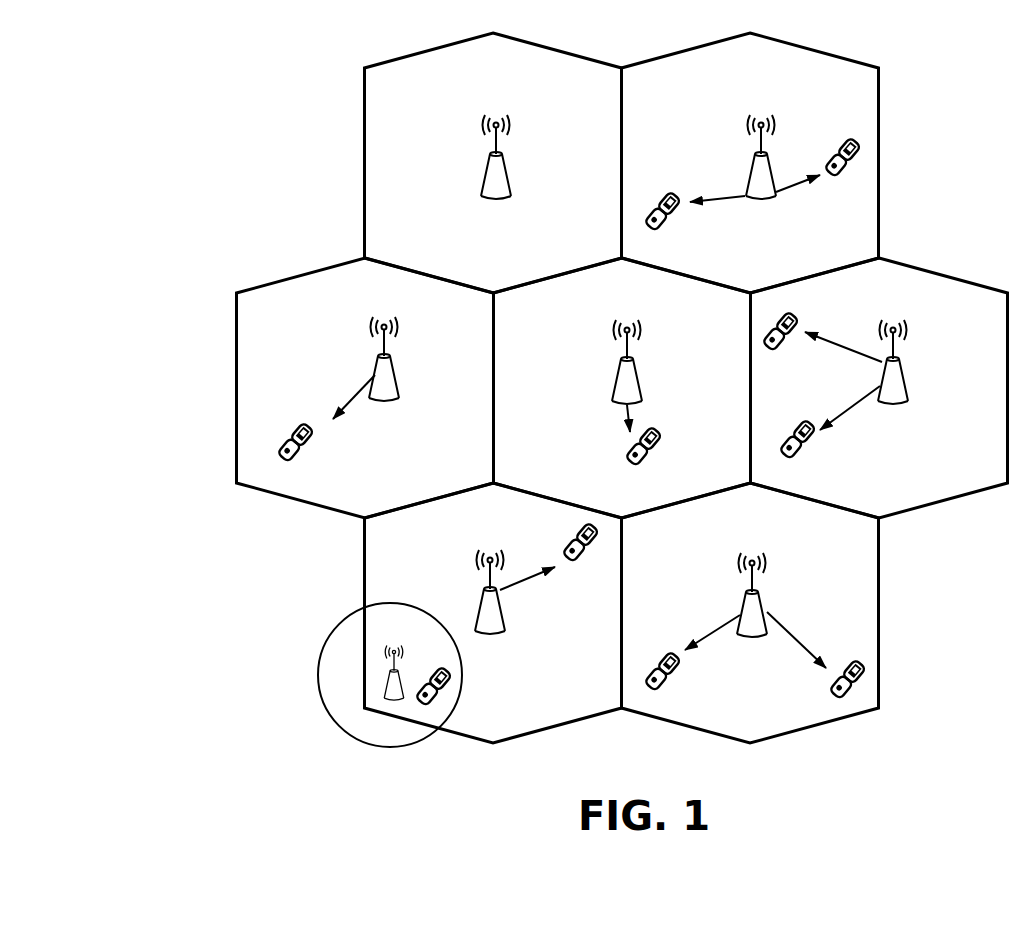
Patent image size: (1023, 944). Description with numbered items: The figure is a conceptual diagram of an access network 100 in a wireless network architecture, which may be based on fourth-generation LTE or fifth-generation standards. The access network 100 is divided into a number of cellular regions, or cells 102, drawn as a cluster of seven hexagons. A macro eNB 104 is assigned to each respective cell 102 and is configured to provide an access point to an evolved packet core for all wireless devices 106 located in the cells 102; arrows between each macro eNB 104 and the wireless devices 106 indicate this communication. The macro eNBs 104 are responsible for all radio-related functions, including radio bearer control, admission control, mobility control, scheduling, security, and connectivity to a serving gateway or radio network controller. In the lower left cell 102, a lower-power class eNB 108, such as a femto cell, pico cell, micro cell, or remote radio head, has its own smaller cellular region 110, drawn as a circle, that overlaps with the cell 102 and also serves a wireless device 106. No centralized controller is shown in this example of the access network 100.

The access network 100 is at (139, 117).
The cellular region 102 is at (535, 44).
The macro eNB 104 is at (498, 109).
The wireless device 106 is at (672, 192).
The lower-power class eNB 108 is at (385, 650).
The cellular region of lower-power class eNB 110 is at (319, 665).